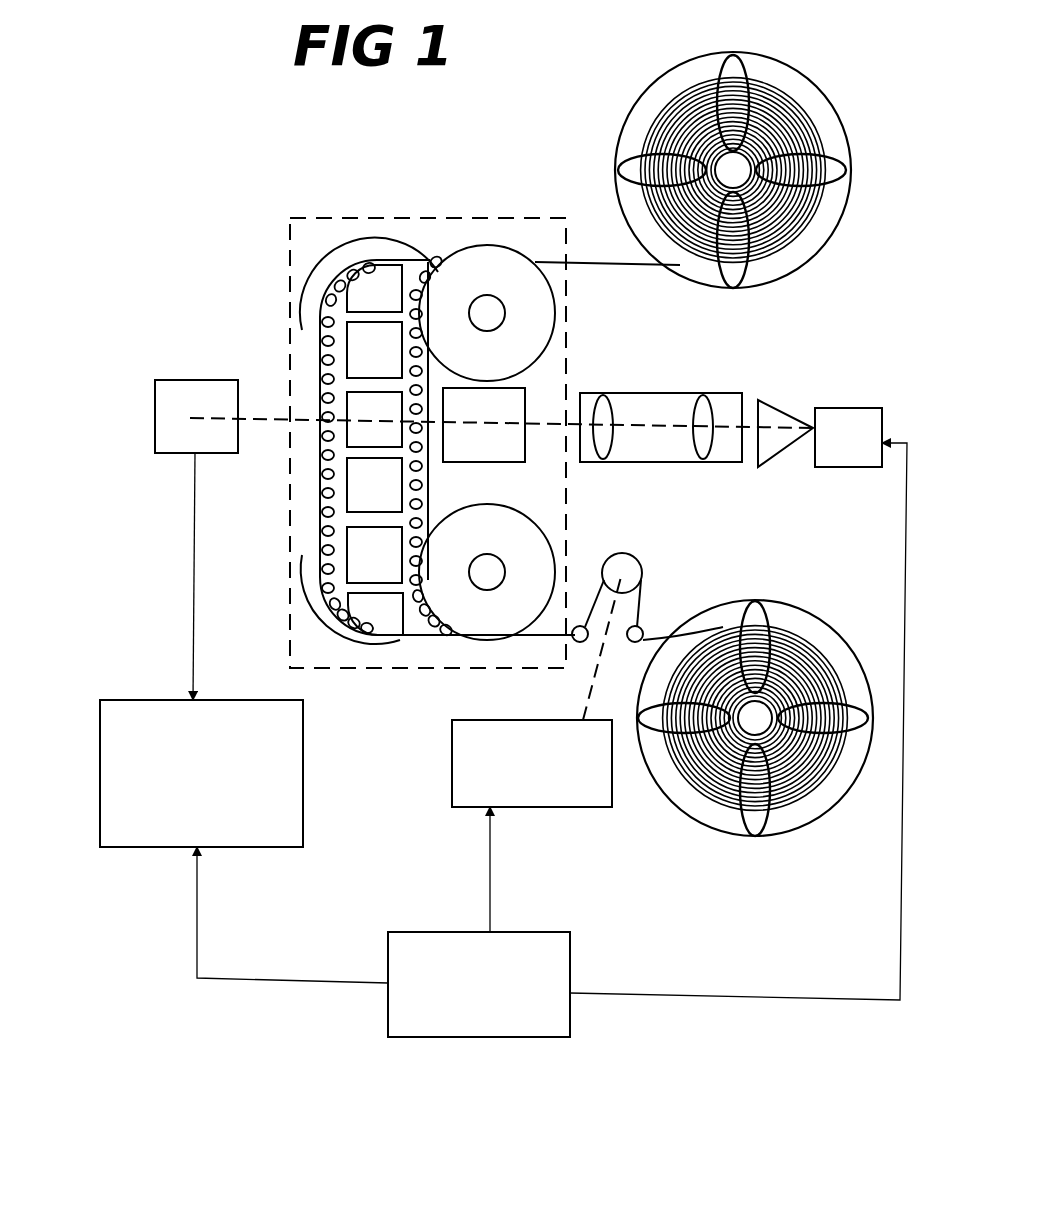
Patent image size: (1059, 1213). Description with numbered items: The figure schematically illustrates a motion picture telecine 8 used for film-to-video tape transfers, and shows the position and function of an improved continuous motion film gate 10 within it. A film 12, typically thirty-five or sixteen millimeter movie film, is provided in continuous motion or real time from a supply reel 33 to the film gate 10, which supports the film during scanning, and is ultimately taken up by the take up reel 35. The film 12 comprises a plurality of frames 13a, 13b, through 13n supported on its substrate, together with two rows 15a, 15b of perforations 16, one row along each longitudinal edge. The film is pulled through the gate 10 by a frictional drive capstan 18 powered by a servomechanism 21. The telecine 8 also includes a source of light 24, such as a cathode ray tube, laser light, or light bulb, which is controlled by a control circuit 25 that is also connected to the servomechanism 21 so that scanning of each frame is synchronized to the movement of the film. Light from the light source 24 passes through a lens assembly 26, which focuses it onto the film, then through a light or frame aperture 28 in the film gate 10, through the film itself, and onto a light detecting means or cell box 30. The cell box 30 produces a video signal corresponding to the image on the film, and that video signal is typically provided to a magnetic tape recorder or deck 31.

The motion picture telecine 8 is at (200, 200).
The continuous motion film gate 10 is at (454, 218).
The film 12 is at (597, 266).
The frame 13a is at (365, 367).
The frame 13b is at (362, 408).
The frame 13n is at (365, 565).
The row of perforations 15a is at (333, 303).
The row of perforations 15b is at (413, 300).
The perforations 16 is at (322, 440).
The frictional drive capstan 18 is at (623, 553).
The servomechanism 21 is at (452, 748).
The light source 24 is at (848, 408).
The control circuit 25 is at (557, 932).
The lens assembly 26 is at (638, 393).
The frame aperture 28 is at (463, 462).
The light detecting means 30 is at (155, 410).
The magnetic tape recorder 31 is at (100, 722).
The supply reel 33 is at (617, 140).
The take up reel 35 is at (735, 838).